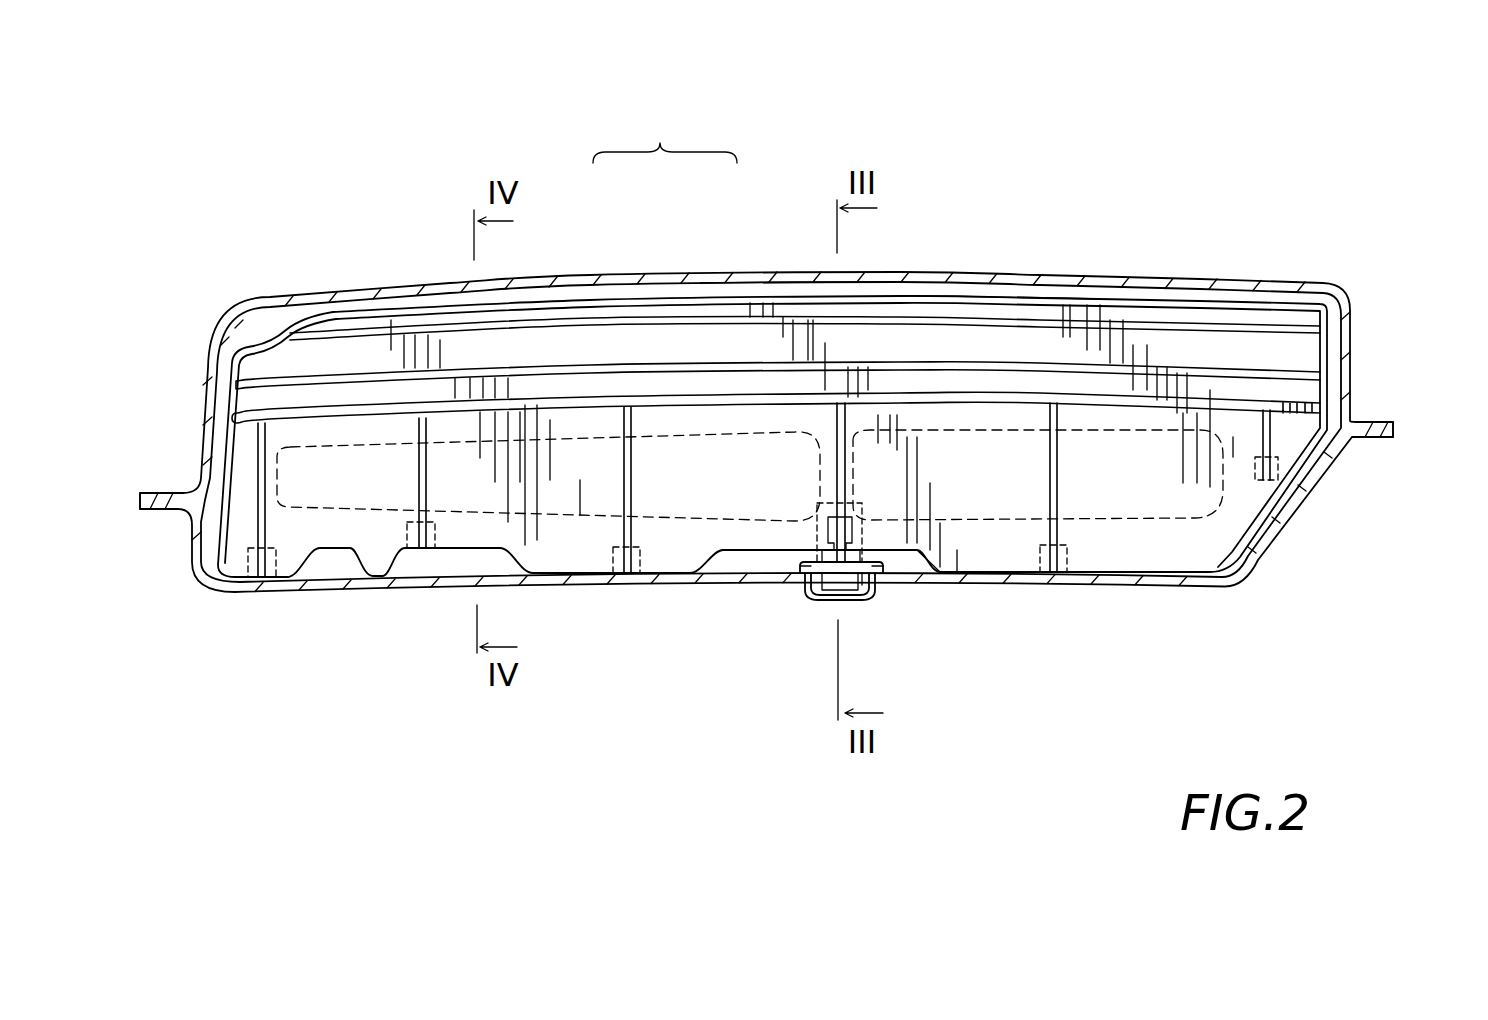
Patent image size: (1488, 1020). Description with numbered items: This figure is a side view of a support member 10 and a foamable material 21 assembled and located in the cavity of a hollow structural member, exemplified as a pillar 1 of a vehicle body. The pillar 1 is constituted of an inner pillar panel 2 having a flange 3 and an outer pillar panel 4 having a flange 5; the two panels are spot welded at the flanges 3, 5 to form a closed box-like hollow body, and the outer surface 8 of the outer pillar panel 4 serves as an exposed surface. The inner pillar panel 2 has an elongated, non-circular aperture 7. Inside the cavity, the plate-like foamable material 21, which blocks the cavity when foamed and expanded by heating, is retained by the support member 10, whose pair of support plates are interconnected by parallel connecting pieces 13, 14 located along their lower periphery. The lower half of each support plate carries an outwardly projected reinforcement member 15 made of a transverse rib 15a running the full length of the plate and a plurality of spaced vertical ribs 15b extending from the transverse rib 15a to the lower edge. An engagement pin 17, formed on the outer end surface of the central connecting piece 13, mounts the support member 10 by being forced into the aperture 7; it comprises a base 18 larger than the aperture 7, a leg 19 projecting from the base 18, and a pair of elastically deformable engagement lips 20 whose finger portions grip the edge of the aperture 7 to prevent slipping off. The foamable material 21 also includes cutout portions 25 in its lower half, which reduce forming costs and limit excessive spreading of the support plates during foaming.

The pillar 1 is at (1440, 227).
The inner pillar panel 2 is at (1317, 478).
The flange 3 is at (163, 510).
The outer pillar panel 4 is at (1350, 317).
The flange 5 is at (163, 493).
The aperture 7 is at (873, 590).
The outer surface 8 is at (877, 272).
The support member 10 is at (1035, 293).
The connecting piece 13 is at (983, 585).
The connecting piece 14 is at (243, 567).
The reinforcement member 15 is at (665, 130).
The transverse rib 15a is at (693, 403).
The vertical ribs 15b is at (623, 463).
The engagement pin 17 is at (822, 626).
The base 18 is at (775, 552).
The leg 19 is at (847, 590).
The engagement lips 20 is at (807, 590).
The foamable material 21 is at (1165, 292).
The cutout portions 25 is at (686, 522).